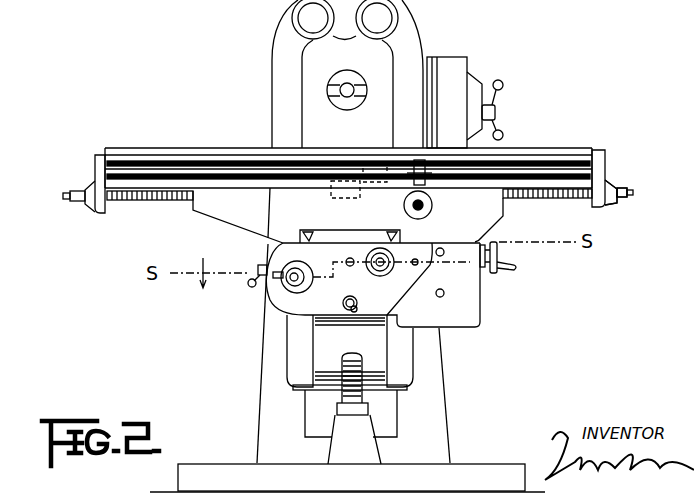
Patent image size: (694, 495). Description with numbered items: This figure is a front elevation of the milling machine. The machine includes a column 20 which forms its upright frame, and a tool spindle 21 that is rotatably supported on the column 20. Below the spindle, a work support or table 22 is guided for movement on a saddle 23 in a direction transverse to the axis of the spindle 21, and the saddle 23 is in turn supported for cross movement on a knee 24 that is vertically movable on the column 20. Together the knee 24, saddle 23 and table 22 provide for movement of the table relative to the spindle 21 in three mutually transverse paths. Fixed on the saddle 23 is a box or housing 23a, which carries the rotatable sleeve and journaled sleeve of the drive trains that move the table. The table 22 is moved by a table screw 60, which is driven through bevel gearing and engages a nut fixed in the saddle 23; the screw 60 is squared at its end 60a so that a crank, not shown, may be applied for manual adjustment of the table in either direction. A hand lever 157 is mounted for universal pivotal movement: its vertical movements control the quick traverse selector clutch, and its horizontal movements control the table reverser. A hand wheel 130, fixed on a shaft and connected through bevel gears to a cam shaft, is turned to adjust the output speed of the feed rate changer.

The column 20 is at (284, 71).
The tool spindle 21 is at (343, 104).
The table 22 is at (238, 155).
The saddle 23 is at (222, 212).
The housing 23a is at (469, 300).
The knee 24 is at (295, 343).
The table screw 60 is at (523, 198).
The squared end of the table screw 60a is at (628, 186).
The hand wheel 130 is at (498, 272).
The hand lever 157 is at (428, 204).